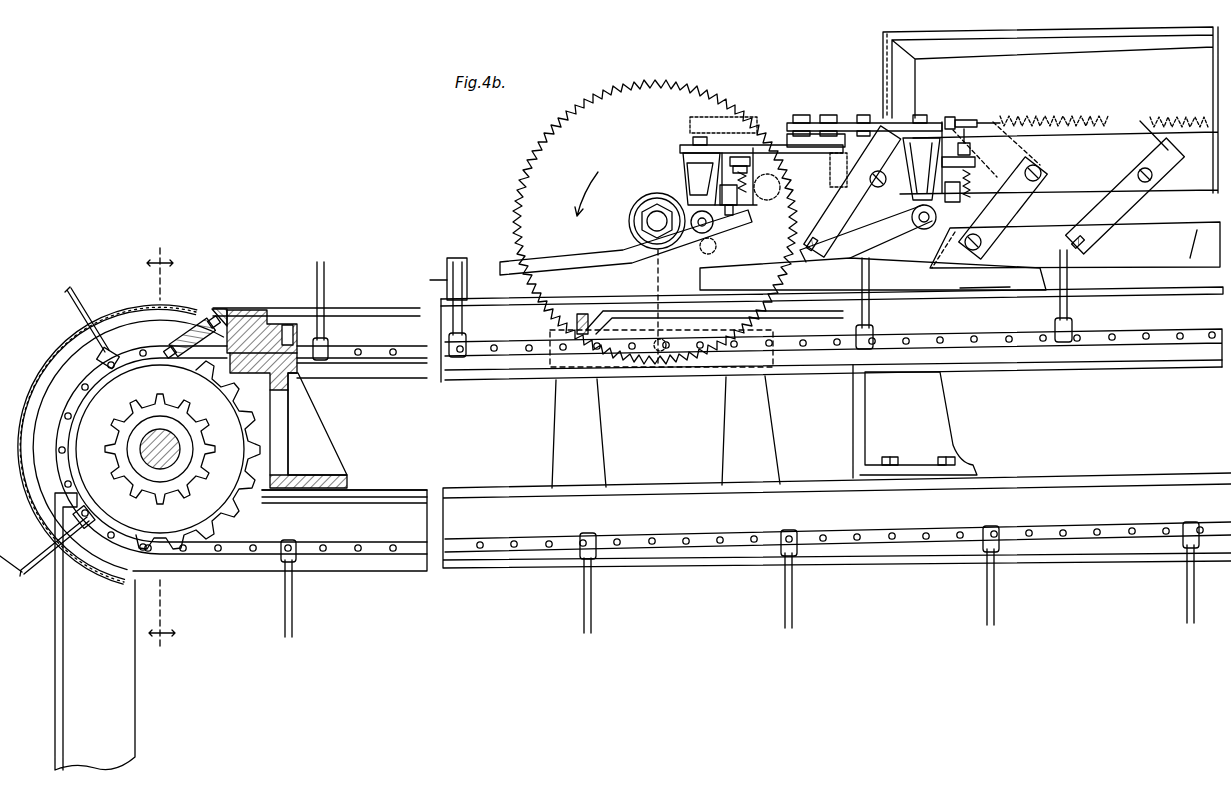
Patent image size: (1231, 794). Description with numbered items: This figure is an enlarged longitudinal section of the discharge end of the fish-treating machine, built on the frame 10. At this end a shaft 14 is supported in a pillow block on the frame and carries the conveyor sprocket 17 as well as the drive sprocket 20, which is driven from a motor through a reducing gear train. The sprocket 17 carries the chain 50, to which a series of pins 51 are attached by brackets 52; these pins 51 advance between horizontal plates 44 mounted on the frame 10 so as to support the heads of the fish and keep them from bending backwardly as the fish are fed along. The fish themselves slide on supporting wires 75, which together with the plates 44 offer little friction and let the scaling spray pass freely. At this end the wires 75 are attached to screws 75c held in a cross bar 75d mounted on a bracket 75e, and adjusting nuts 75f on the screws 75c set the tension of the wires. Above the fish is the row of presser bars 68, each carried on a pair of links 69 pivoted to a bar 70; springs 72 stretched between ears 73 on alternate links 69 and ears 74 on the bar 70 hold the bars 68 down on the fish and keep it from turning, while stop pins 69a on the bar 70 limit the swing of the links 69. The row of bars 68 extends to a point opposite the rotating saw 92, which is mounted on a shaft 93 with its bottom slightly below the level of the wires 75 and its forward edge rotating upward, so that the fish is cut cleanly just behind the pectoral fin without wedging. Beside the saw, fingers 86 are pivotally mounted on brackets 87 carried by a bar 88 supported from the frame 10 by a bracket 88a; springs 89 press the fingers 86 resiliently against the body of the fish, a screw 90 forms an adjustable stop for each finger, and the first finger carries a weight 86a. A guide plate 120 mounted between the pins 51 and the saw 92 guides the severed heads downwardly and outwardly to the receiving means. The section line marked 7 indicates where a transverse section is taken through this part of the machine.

The section line 7 is at (161, 449).
The frame 10 is at (705, 568).
The shaft 14 is at (160, 468).
The conveyor sprocket 17 is at (258, 498).
The drive sprocket 20 is at (200, 425).
The horizontal plates 44 is at (985, 298).
The chain 50 is at (510, 377).
The pins 51 is at (328, 276).
The brackets 52 is at (333, 353).
The presser bars 68 is at (830, 272).
The links 69 is at (836, 226).
The stop pins 69a is at (912, 208).
The bar 70 is at (1075, 225).
The springs 72 is at (1058, 117).
The ears 73 is at (1140, 119).
The ears 74 is at (978, 117).
The supporting wires 75 is at (356, 310).
The screws 75c is at (180, 340).
The cross bar 75d is at (293, 299).
The bracket 75e is at (318, 440).
The adjusting nuts 75f is at (208, 312).
The fingers 86 is at (592, 268).
The weight 86a is at (745, 308).
The brackets 87 is at (683, 160).
The bar 88 is at (800, 120).
The bracket 88a is at (940, 412).
The springs 89 is at (1010, 195).
The screw 90 is at (960, 243).
The rotating saw 92 is at (548, 150).
The shaft 93 is at (657, 193).
The guide plate 120 is at (483, 272).